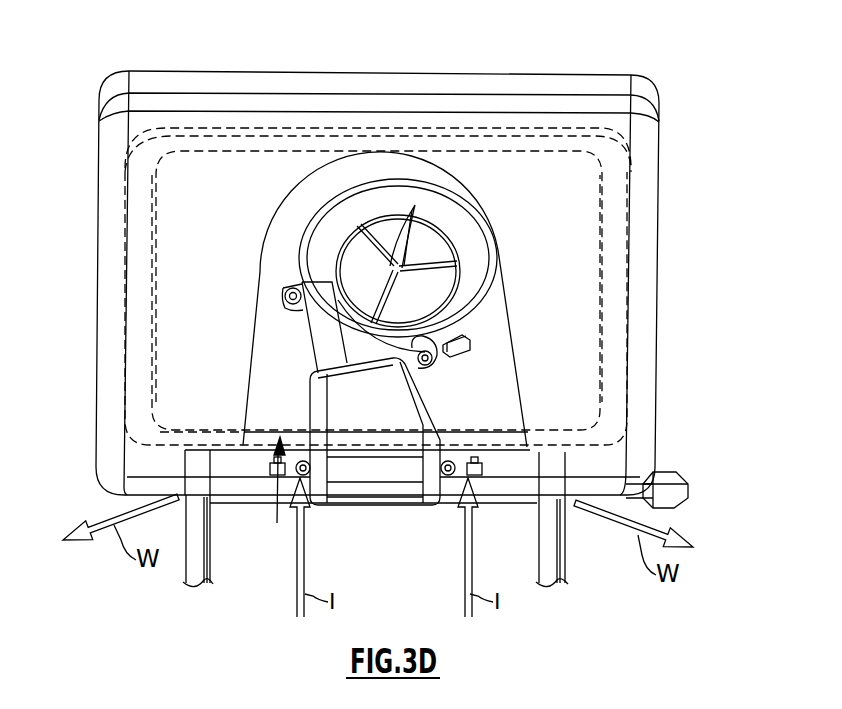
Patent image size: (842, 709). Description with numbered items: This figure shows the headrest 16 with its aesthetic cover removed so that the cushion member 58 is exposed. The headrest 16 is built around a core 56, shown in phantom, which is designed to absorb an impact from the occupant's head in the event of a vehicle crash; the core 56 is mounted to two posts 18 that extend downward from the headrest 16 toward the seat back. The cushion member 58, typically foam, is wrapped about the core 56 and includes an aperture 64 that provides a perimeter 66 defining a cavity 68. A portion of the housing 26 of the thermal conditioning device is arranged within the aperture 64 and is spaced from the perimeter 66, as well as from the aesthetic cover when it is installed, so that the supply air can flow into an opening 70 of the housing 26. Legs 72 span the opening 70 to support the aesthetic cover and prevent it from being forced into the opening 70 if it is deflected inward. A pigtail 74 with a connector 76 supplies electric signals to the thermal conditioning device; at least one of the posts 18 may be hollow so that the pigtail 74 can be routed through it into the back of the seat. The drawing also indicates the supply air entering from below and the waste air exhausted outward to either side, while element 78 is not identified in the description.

The headrest 16 is at (681, 59).
The posts 18 is at (200, 553).
The housing 26 is at (482, 226).
The core 56 is at (613, 332).
The cushion member 58 is at (650, 263).
The aperture 64 is at (277, 523).
The perimeter 66 is at (509, 346).
The cavity 68 is at (488, 401).
The opening 70 is at (457, 281).
The legs 72 is at (415, 205).
The pigtail 74 is at (490, 488).
The connector 76 is at (678, 505).
The base plate 78 is at (207, 497).